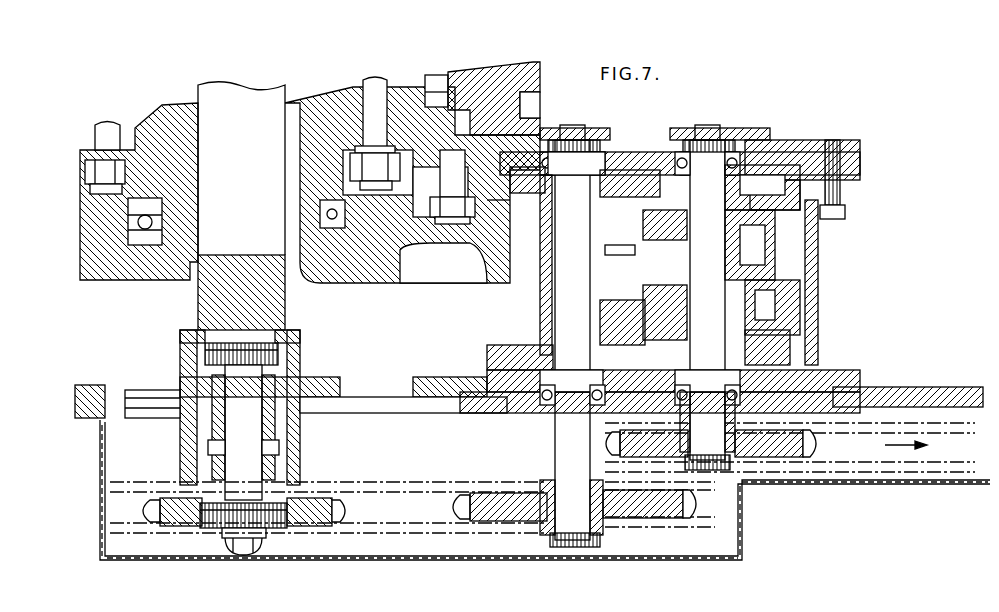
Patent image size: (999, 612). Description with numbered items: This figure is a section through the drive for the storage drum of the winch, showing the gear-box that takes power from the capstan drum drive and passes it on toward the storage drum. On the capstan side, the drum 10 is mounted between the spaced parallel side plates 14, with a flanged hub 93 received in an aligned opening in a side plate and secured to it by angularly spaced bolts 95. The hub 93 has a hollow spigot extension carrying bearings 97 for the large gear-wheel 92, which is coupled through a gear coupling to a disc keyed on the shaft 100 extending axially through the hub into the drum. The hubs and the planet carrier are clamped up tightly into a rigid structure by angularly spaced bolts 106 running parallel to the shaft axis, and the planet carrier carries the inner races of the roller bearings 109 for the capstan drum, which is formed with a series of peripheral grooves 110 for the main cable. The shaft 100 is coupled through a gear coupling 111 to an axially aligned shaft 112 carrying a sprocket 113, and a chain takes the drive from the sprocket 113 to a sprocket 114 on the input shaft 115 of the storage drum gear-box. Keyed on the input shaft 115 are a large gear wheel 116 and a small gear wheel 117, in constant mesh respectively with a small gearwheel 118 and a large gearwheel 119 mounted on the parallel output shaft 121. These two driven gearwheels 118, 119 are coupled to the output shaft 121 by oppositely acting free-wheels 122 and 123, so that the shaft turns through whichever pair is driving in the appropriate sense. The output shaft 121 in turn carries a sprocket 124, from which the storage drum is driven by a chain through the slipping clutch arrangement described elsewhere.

The drum 10 is at (500, 72).
The side plates 14 is at (545, 128).
The gear-wheel 92 is at (486, 272).
The flanged hub 93 is at (318, 128).
The bolts 95 is at (450, 172).
The bearings 97 is at (160, 270).
The shaft 100 is at (246, 105).
The bolts 106 is at (373, 88).
The roller bearings 109 is at (436, 88).
The peripheral grooves 110 is at (528, 96).
The gear coupling 111 is at (300, 355).
The shaft 112 is at (230, 375).
The sprocket 113 is at (320, 498).
The sprocket 114 is at (718, 516).
The input shaft 115 is at (562, 449).
The large gear wheel 116 is at (508, 352).
The small gear wheel 117 is at (524, 196).
The small gearwheel 118 is at (790, 340).
The large gearwheel 119 is at (790, 208).
The output shaft 121 is at (735, 240).
The free-wheel 122 is at (665, 238).
The free-wheel 123 is at (775, 300).
The sprocket 124 is at (790, 450).